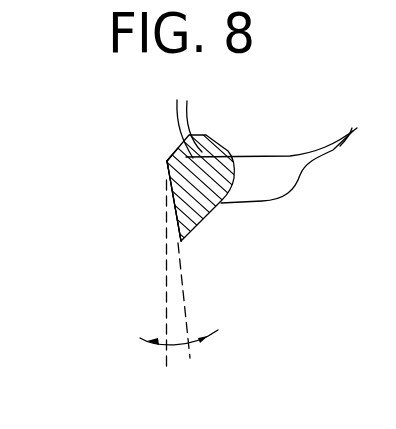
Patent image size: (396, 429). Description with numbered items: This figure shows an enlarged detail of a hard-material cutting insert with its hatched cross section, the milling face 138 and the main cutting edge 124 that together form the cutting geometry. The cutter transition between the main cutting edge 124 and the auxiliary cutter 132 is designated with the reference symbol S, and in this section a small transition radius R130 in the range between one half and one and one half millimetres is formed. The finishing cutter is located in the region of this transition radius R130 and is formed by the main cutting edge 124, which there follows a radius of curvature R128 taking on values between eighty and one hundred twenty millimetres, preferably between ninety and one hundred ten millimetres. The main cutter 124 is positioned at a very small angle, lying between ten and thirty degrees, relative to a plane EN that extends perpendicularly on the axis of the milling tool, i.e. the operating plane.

The milling face 138 is at (207, 219).
The auxiliary cutter 132 is at (177, 154).
The transition radius R130 is at (167, 162).
The cutter transition S is at (166, 164).
The radius of curvature R128 is at (167, 212).
The main cutting edge 124 is at (127, 232).
The plane EN is at (168, 320).